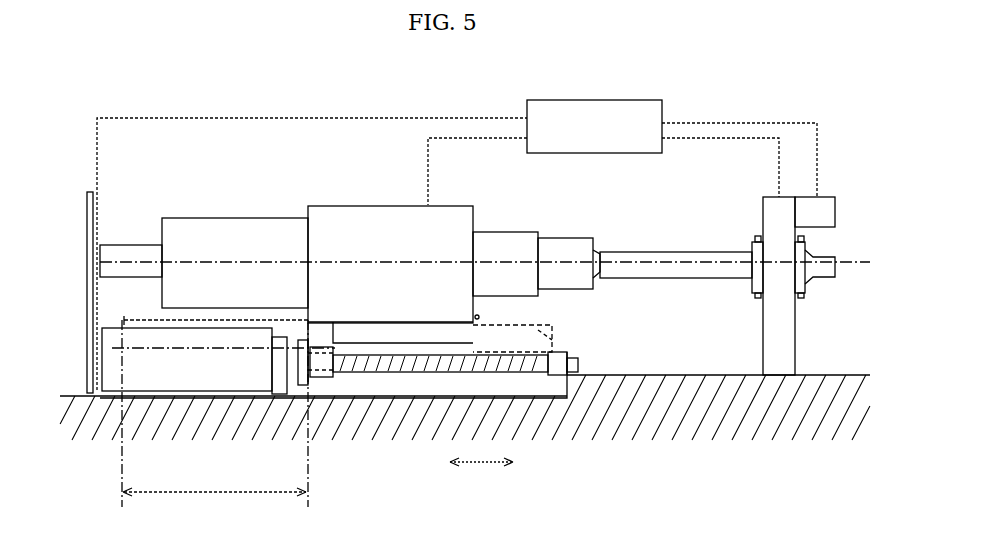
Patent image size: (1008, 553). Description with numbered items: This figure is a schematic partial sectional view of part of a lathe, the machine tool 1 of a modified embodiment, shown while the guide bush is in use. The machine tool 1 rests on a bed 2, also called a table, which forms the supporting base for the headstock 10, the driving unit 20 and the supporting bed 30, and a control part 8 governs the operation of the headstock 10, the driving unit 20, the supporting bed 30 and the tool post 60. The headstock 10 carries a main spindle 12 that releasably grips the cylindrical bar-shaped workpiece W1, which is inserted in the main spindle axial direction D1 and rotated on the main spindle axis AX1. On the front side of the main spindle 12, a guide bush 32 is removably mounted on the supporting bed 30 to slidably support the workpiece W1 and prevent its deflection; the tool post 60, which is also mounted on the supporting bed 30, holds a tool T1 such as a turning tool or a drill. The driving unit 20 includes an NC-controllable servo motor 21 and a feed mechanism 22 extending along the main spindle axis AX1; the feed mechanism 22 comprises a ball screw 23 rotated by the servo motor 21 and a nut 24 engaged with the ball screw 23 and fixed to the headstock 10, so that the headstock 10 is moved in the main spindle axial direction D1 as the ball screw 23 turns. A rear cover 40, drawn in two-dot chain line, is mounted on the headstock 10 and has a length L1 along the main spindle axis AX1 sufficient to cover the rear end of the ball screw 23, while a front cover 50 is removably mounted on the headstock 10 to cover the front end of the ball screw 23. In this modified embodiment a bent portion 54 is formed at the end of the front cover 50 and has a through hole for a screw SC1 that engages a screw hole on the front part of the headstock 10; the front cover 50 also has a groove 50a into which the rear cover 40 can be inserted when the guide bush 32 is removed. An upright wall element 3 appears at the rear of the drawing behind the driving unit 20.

The machine tool (lathe) 1 is at (127, 98).
The bed 2 is at (702, 375).
The wall 3 is at (87, 211).
The control part 8 is at (622, 152).
The headstock 10 is at (350, 232).
The main spindle 12 is at (577, 238).
The driving unit 20 is at (339, 405).
The servo motor 21 is at (158, 380).
The feed mechanism 22 is at (371, 389).
The ball screw 23 is at (440, 373).
The nut 24 is at (325, 378).
The supporting bed 30 is at (796, 336).
The guide bush 32 is at (756, 242).
The rear cover (first cover) 40 is at (166, 319).
The front cover (second cover) 50 is at (552, 324).
The groove 50a is at (552, 337).
The bent portion 54 is at (476, 314).
The tool post 60 is at (833, 197).
The main spindle axis AX1 is at (398, 262).
The screw SC1 is at (478, 312).
The workpiece W1 is at (710, 252).
The tool T1 is at (835, 242).
The length of the rear cover L1 is at (215, 415).
The main spindle axial direction D1 is at (479, 469).